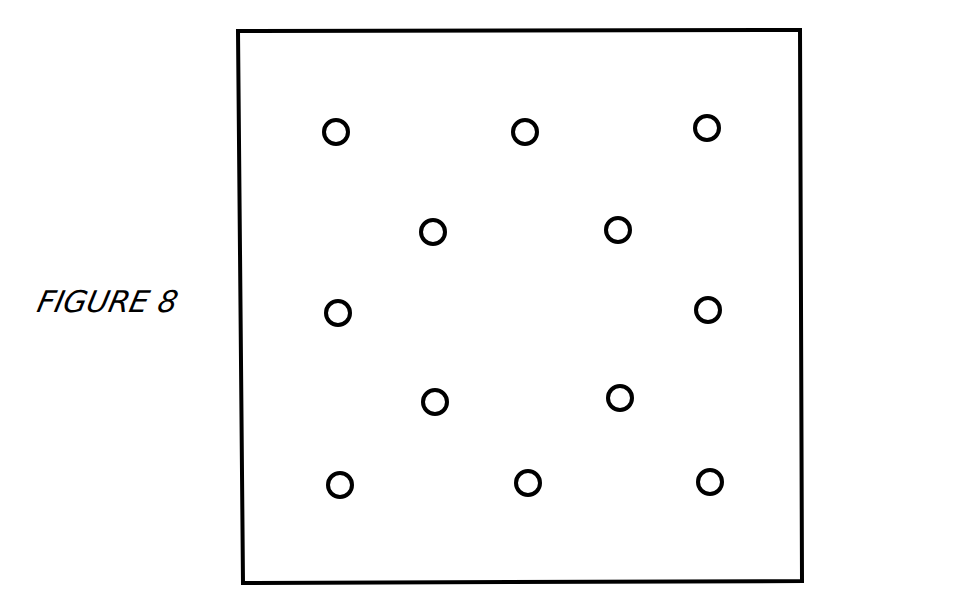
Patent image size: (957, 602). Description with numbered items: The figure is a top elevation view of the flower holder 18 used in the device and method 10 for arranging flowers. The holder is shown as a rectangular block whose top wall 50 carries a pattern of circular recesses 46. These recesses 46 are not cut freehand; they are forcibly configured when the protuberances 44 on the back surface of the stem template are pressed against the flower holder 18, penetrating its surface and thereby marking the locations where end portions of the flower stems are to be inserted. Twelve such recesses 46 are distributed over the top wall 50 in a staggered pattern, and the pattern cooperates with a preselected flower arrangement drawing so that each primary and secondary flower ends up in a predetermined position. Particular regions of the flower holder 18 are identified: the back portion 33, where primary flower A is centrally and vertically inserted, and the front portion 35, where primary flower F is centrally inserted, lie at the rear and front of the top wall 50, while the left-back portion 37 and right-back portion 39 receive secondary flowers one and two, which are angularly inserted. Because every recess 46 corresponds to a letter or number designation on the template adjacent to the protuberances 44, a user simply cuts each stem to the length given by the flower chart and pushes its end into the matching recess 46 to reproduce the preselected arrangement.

The device and method for arranging flowers 10 is at (868, 103).
The flower holder 18 is at (770, 247).
The top wall 50 is at (766, 372).
The recesses 46 is at (515, 307).
The protuberances 44 is at (352, 315).
The left-back portion 37 is at (323, 108).
The back portion 33 is at (527, 100).
The right-back portion 39 is at (710, 104).
The front portion 35 is at (533, 512).